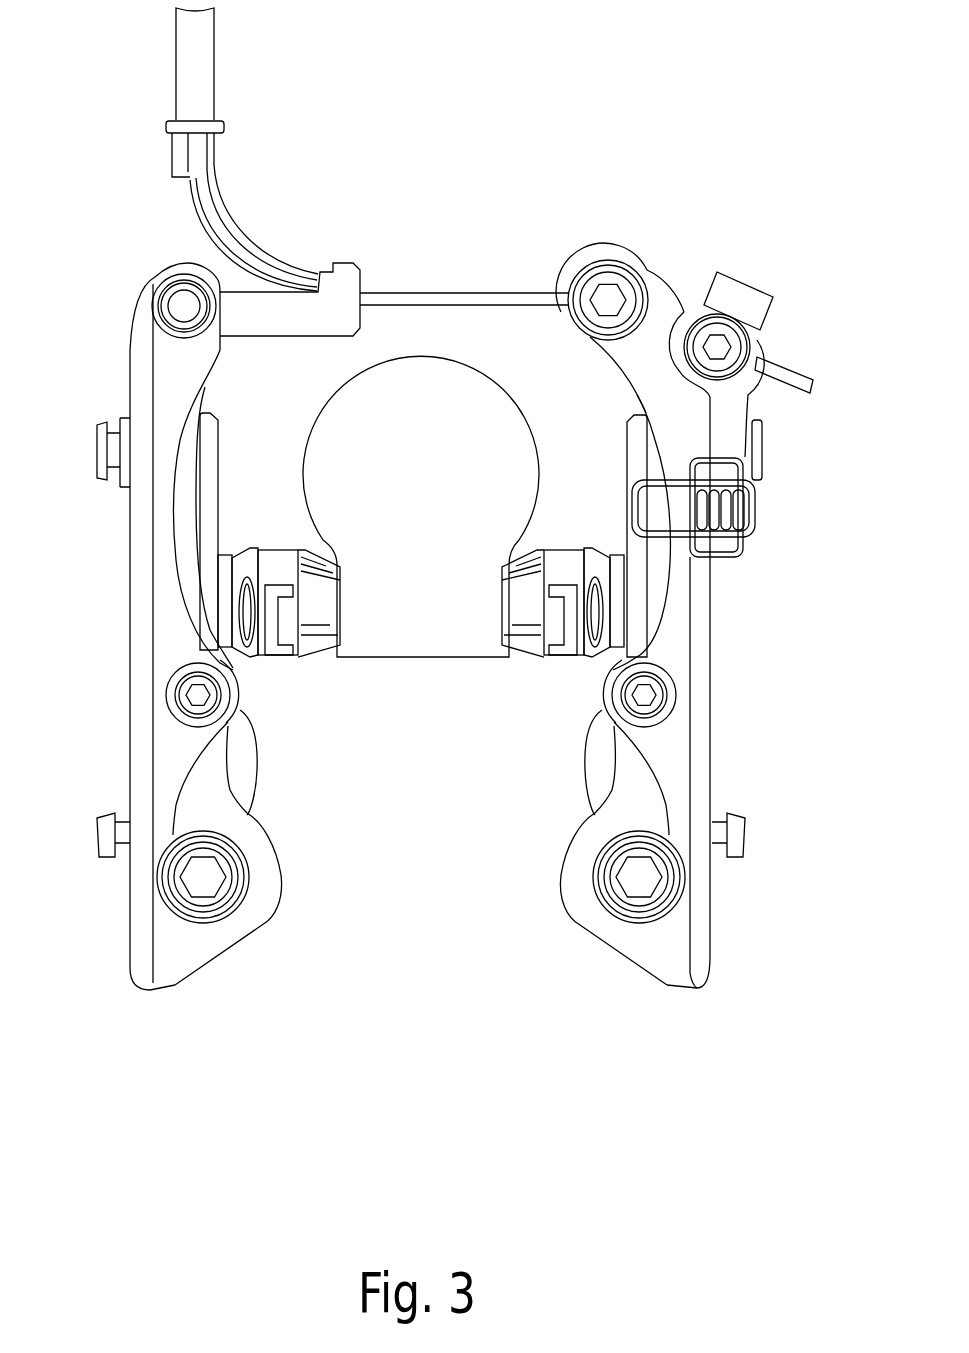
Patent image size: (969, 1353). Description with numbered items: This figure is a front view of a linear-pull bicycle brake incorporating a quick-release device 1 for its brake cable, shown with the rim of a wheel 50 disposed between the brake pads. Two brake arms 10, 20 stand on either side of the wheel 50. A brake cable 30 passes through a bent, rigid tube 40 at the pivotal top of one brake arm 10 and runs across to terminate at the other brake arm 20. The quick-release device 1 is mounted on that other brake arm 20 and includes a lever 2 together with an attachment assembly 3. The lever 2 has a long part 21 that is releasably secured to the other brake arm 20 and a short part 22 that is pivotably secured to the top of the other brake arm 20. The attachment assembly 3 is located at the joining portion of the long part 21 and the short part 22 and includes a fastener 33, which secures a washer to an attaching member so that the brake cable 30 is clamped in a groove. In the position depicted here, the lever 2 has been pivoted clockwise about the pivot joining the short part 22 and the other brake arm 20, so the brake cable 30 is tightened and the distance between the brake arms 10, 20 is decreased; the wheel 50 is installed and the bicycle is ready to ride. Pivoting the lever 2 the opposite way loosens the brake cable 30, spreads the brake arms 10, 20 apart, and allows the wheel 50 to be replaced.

The quick-release device 1 is at (604, 145).
The lever 2 is at (748, 550).
The attachment assembly 3 is at (747, 278).
The brake arm 10 is at (150, 680).
The brake arm 20 is at (693, 740).
The long part 21 is at (739, 406).
The short part 22 is at (690, 297).
The brake cable 30 is at (447, 292).
The fastener 33 is at (758, 306).
The bent, rigid tube 40 is at (214, 203).
The wheel 50 is at (425, 660).